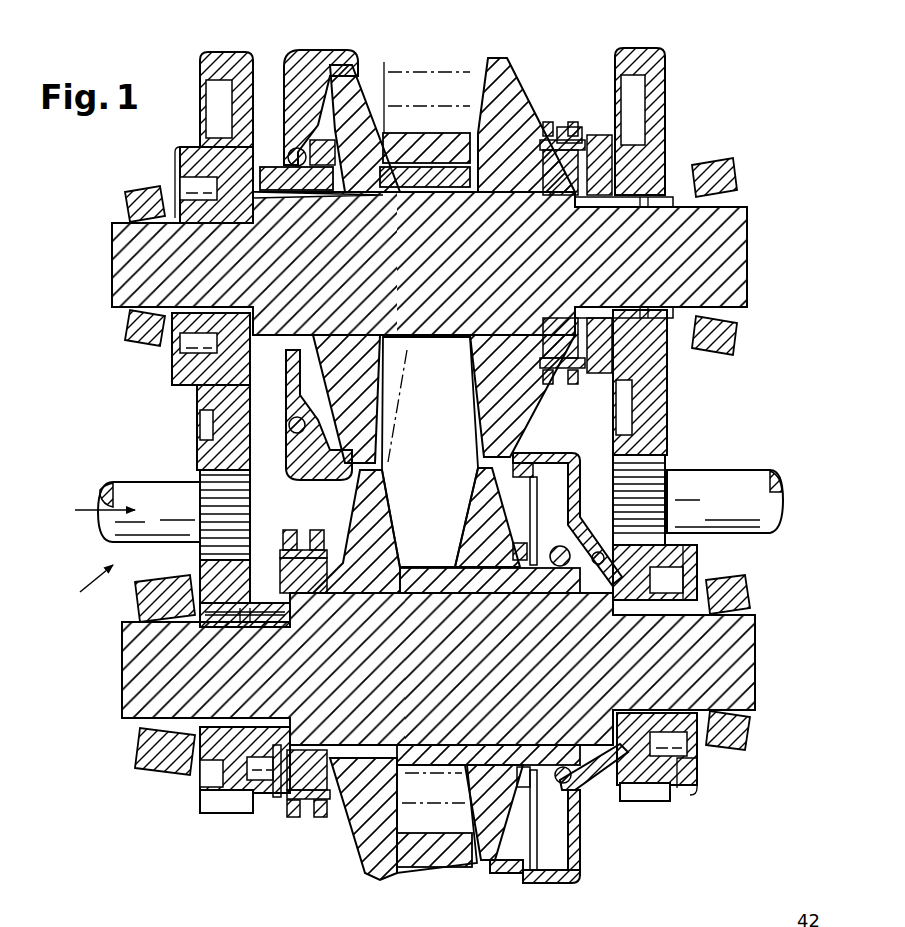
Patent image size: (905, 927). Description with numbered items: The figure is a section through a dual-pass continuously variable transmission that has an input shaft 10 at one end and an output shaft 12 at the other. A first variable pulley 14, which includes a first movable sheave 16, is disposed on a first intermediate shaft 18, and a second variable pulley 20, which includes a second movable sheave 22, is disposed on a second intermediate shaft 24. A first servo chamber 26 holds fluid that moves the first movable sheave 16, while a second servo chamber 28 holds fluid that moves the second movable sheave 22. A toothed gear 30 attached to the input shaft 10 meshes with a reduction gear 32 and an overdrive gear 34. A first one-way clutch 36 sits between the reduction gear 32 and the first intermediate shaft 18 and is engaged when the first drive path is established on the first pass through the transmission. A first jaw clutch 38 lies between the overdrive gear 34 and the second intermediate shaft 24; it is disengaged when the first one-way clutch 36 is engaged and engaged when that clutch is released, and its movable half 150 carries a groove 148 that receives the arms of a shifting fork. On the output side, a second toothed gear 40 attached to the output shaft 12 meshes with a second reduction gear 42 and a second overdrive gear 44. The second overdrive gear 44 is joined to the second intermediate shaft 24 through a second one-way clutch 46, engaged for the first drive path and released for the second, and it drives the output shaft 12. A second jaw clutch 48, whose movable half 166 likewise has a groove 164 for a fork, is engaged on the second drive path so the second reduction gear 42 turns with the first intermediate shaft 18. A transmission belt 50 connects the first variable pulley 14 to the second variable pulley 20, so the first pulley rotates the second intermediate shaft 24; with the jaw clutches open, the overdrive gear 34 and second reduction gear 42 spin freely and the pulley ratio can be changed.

The input shaft 10 is at (112, 522).
The output shaft 12 is at (748, 478).
The first variable pulley 14 is at (517, 60).
The first movable sheave 16 is at (313, 87).
The first intermediate shaft 18 is at (126, 280).
The second variable pulley 20 is at (350, 848).
The second movable sheave 22 is at (483, 873).
The second intermediate shaft 24 is at (742, 646).
The first servo chamber 26 is at (285, 62).
The second servo chamber 28 is at (582, 850).
The toothed gear 30 is at (208, 525).
The reduction gear 32 is at (227, 103).
The overdrive gear 34 is at (210, 783).
The first one-way clutch 36 is at (197, 187).
The first jaw clutch 38 is at (272, 802).
The second toothed gear 40 is at (663, 482).
The second reduction gear 42 is at (668, 62).
The second overdrive gear 44 is at (657, 803).
The second one-way clutch 46 is at (677, 740).
The second jaw clutch 48 is at (591, 134).
The transmission belt 50 is at (440, 860).
The groove 148 is at (300, 818).
The movable half 150 is at (278, 812).
The groove 164 is at (567, 127).
The movable half 166 is at (535, 160).